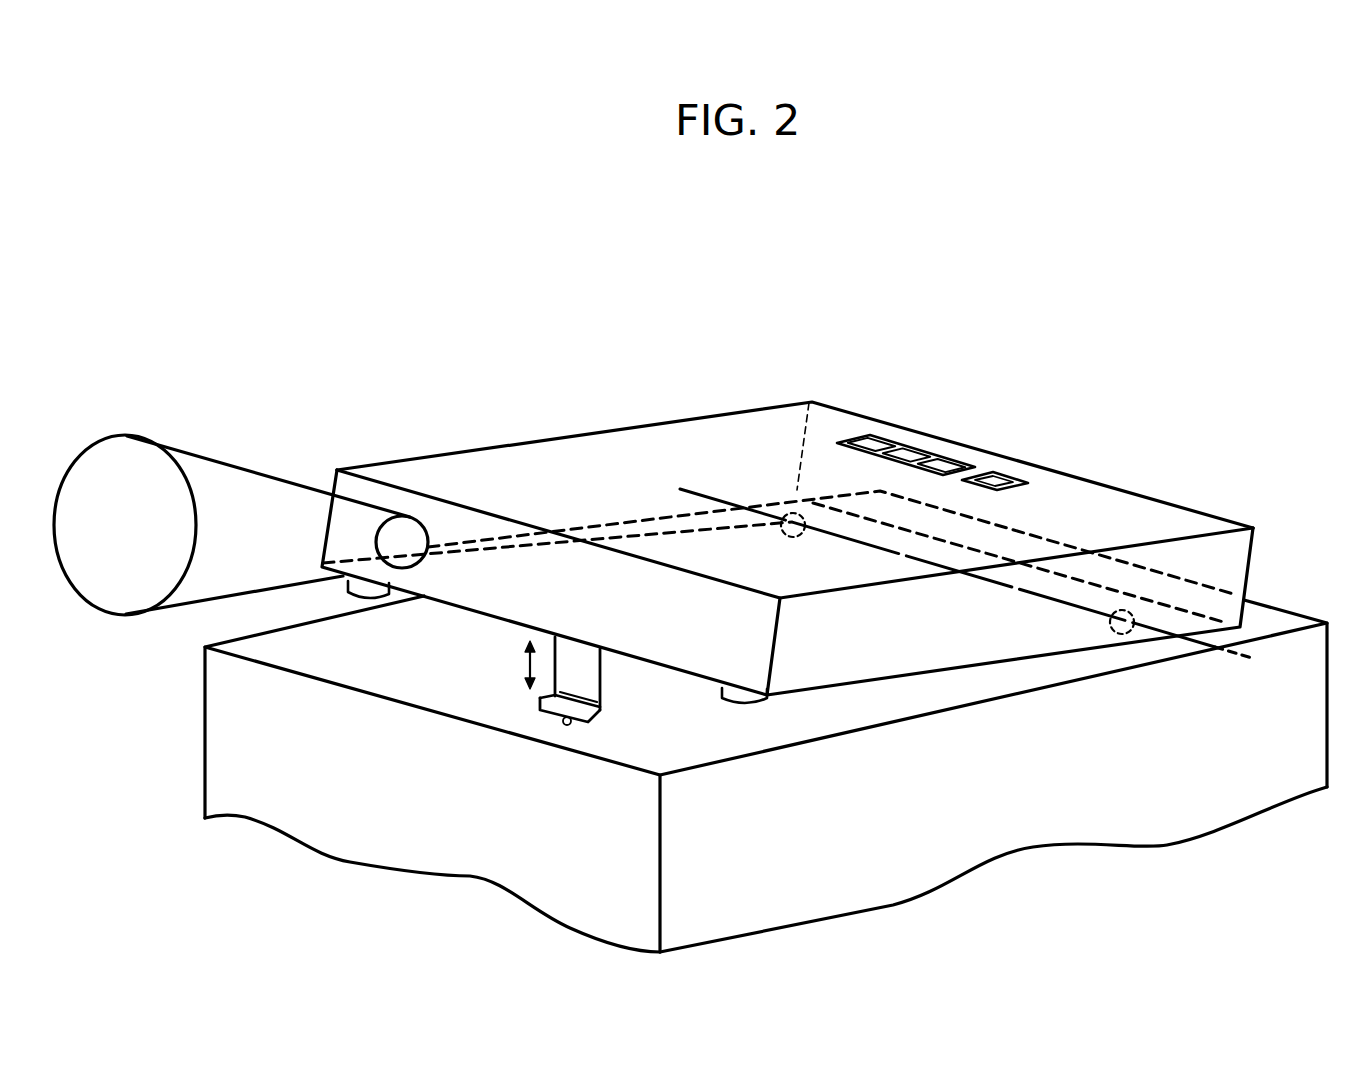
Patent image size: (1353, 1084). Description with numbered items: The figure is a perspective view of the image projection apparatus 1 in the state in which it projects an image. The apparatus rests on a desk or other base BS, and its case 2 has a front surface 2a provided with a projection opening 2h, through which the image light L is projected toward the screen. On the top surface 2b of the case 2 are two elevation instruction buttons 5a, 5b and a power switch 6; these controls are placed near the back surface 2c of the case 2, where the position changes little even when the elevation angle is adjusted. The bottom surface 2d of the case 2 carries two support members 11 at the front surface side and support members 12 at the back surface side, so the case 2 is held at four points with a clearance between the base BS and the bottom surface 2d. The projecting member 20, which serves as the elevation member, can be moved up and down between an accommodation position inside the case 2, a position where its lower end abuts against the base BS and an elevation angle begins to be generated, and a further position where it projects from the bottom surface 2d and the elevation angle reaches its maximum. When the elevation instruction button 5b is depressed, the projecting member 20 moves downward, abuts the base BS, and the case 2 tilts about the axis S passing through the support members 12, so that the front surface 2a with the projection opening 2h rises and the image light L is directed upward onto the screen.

The image projection apparatus 1 is at (766, 665).
The case 2 is at (808, 564).
The front surface 2a is at (463, 527).
The top surface 2b is at (760, 423).
The back surface 2c is at (1236, 562).
The bottom surface 2d is at (672, 647).
The projection opening 2h is at (411, 515).
The elevation instruction button 5a is at (885, 438).
The elevation instruction button 5b is at (958, 457).
The power switch 6 is at (1013, 476).
The support member 11 is at (365, 594).
The support member 12 is at (793, 512).
The projecting member 20 is at (590, 672).
The image light L is at (253, 471).
The axis S is at (1192, 642).
The base BS is at (723, 740).